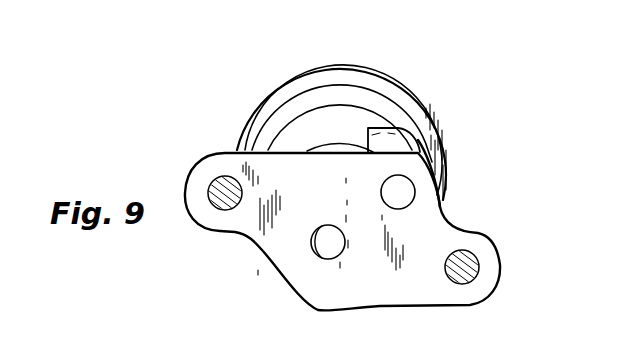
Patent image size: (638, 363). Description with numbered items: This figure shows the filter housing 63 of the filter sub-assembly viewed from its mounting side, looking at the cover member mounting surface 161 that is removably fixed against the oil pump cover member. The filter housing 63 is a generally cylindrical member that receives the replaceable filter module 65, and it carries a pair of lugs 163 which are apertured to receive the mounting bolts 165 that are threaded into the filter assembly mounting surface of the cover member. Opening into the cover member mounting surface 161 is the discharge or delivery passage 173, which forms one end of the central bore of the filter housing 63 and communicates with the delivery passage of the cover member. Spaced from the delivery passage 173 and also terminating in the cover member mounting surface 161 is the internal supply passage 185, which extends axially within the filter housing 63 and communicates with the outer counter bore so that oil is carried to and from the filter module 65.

The replaceable filter module 65 is at (399, 58).
The filter housing 63 is at (358, 119).
The cover member mounting surface 161 is at (320, 278).
The lugs 163 is at (213, 158).
The mounting bolts 165 is at (222, 200).
The internal supply passage 185 is at (400, 192).
The discharge or delivery passage 173 is at (323, 250).